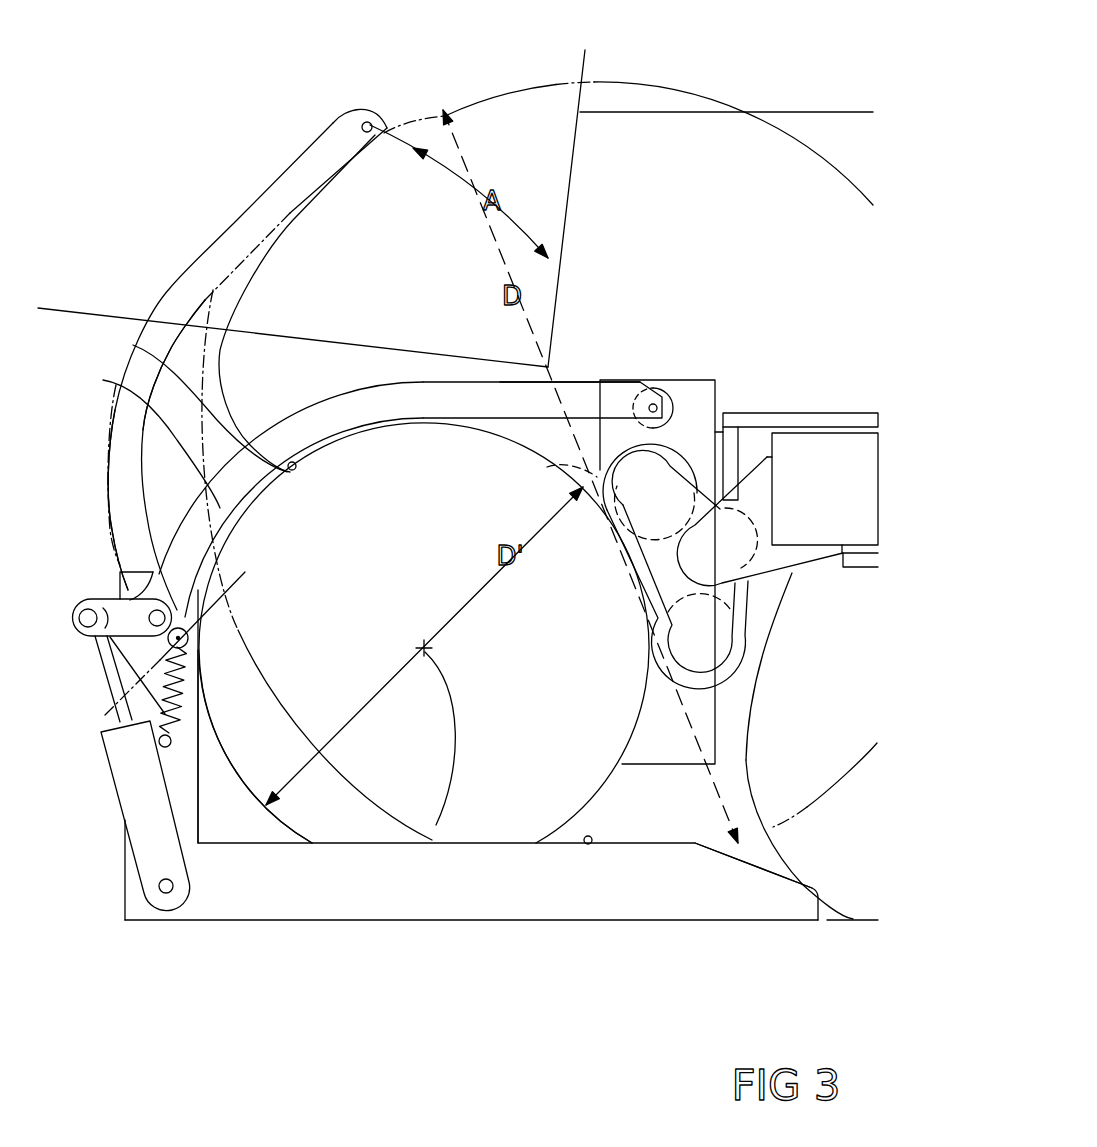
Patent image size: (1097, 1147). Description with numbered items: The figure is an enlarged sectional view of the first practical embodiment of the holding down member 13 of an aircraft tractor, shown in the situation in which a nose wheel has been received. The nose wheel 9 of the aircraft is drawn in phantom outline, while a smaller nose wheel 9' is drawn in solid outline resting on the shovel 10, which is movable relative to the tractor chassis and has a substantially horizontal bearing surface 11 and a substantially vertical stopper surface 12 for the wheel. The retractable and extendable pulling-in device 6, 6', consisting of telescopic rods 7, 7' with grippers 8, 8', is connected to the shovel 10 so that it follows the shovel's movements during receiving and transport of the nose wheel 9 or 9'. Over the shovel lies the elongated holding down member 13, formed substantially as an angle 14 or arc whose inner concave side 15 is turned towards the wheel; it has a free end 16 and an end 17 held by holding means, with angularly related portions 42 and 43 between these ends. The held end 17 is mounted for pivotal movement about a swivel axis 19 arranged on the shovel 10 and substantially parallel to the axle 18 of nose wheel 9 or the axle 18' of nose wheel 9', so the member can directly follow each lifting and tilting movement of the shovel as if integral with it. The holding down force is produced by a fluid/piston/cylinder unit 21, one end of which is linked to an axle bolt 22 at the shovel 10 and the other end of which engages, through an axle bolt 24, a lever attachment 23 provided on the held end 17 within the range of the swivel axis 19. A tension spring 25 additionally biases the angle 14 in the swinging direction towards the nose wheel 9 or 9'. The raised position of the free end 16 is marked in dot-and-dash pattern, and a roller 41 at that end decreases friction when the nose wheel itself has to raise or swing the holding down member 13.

The pulling-in device 6 is at (825, 420).
The pulling-in device 6' is at (800, 490).
The telescopic rod 7 is at (696, 485).
The telescopic rod 7' is at (721, 572).
The gripper 8 is at (817, 666).
The gripper 8' is at (799, 839).
The nose wheel 9 is at (424, 699).
The smaller nose wheel 9' is at (267, 811).
The shovel 10 is at (545, 933).
The bearing surface 11 is at (590, 844).
The stopper surface 12 is at (200, 798).
The holding down member 13 is at (172, 517).
The angle 14 is at (144, 436).
The inner concave side 15 is at (133, 345).
The free end 16 is at (312, 126).
The held end 17 is at (136, 582).
The axle 18 is at (535, 479).
The axle 18' is at (453, 804).
The swivel axis 19 is at (165, 618).
The fluid/piston/cylinder unit 21 is at (110, 832).
The axle bolt 22 is at (162, 899).
The lever attachment 23 is at (116, 592).
The axle bolt 24 is at (80, 599).
The tension spring 25 is at (185, 687).
The roller 41 is at (370, 112).
The angularly related portion 42 is at (500, 402).
The angularly related portion 43 is at (262, 491).